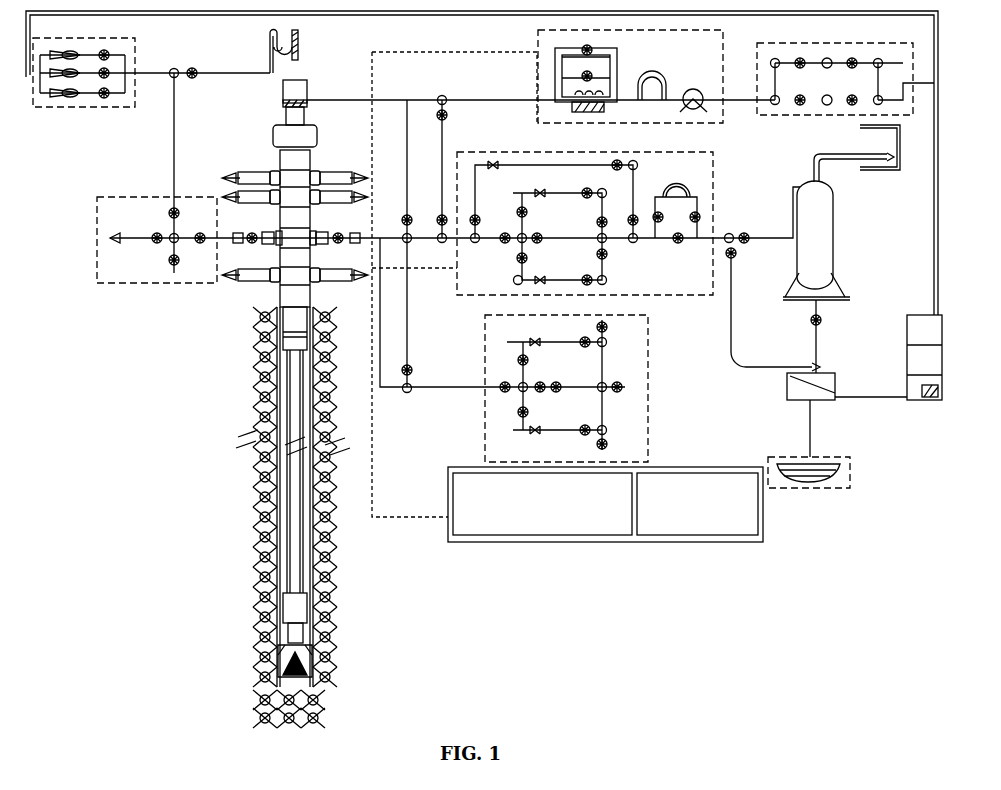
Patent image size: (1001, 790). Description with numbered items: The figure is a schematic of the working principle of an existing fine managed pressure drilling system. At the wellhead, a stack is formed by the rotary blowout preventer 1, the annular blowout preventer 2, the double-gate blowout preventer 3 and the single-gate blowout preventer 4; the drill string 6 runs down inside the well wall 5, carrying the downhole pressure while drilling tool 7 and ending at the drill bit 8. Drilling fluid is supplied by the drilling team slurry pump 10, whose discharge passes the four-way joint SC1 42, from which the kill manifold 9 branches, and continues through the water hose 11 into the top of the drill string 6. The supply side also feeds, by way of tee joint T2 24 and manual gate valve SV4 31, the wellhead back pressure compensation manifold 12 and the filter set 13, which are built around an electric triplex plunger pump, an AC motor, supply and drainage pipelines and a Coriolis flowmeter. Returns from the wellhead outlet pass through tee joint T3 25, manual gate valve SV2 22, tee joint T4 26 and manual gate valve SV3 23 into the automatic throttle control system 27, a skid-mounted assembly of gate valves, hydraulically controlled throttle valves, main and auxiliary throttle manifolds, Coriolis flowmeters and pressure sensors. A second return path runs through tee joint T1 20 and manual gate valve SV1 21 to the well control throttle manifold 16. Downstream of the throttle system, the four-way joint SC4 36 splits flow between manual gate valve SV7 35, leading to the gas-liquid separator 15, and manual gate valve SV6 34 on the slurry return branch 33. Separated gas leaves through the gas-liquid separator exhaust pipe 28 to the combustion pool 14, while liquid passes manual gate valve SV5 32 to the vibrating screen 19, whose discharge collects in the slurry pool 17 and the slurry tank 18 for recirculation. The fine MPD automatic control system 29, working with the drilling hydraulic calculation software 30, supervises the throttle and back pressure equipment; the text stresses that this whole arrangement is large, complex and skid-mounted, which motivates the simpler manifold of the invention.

The rotary blowout preventer 1 is at (280, 86).
The annular blowout preventer 2 is at (273, 136).
The double-gate blowout preventer 3 is at (257, 168).
The single-gate blowout preventer 4 is at (235, 280).
The well wall 5 is at (256, 378).
The drill string 6 is at (290, 510).
The downhole pressure while drilling (PWD) 7 is at (262, 598).
The drill bit 8 is at (258, 665).
The kill manifold 9 is at (138, 286).
The drilling team slurry pump 10 is at (75, 108).
The water hose 11 is at (300, 36).
The wellhead back pressure compensation manifold 12 is at (537, 38).
The filter set 13 is at (790, 117).
The combustion pool 14 is at (903, 172).
The gas-liquid separator 15 is at (838, 243).
The well control throttle manifold 16 is at (650, 404).
The slurry pool 17 is at (853, 482).
The slurry tank 18 is at (920, 403).
The vibrating screen 19 is at (787, 396).
The tee joint T1 20 is at (410, 396).
The manual gate valve SV1 21 is at (413, 370).
The manual gate valve SV2 22 is at (403, 217).
The manual gate valve SV3 23 is at (438, 214).
The tee joint T2 24 is at (438, 94).
The tee joint T3 25 is at (403, 246).
The tee joint T4 26 is at (444, 246).
The automatic throttle control system 27 is at (196, 80).
The gas-liquid separator exhaust pipe 28 is at (853, 156).
The fine MPD automatic control system 29 is at (557, 543).
The drilling hydraulic calculation software 30 is at (718, 543).
The manual gate valve SV4 31 is at (448, 118).
The manual gate valve SV5 32 is at (822, 325).
The slurry return branch 33 is at (735, 318).
The manual gate valve SV6 34 is at (736, 258).
The manual gate valve SV7 35 is at (750, 232).
The four-way joint SC4 36 is at (727, 232).
The four-way joint SC1 42 is at (175, 68).